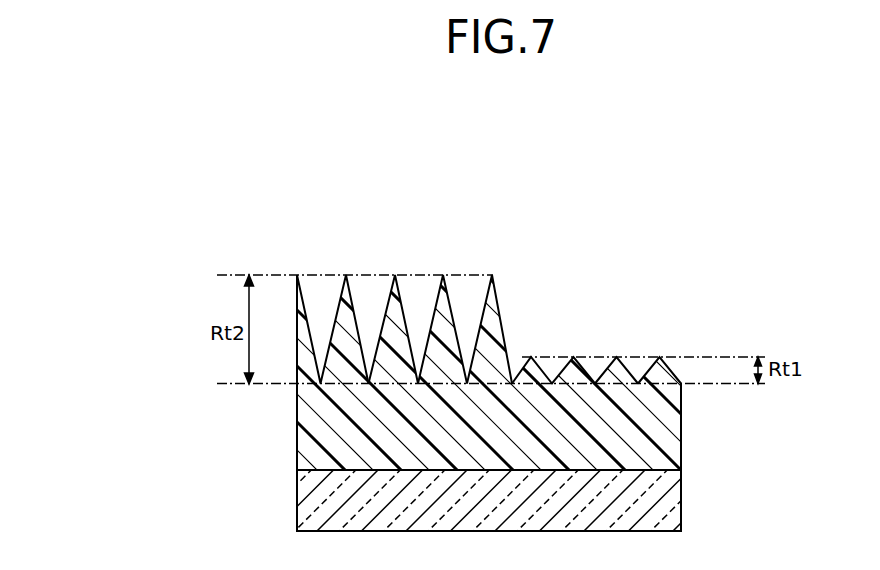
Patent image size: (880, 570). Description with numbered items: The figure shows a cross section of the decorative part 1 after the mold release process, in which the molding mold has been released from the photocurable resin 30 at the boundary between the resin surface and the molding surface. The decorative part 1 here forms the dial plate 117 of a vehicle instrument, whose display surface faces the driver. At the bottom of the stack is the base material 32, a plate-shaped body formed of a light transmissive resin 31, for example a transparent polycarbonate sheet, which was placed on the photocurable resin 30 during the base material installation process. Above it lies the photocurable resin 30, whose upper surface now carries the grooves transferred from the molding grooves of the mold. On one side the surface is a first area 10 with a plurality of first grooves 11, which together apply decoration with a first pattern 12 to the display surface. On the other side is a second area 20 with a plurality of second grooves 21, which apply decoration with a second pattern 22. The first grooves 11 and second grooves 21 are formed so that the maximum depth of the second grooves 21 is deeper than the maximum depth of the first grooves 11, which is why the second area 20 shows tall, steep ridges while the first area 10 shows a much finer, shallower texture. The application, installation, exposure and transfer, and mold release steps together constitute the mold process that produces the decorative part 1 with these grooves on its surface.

The dial plate 117 is at (193, 408).
The decorative part 1 is at (483, 332).
The first area 10 is at (606, 202).
The first grooves 11 is at (607, 368).
The first pattern 12 is at (642, 325).
The second area 20 is at (298, 180).
The second grooves 21 is at (382, 318).
The second pattern 22 is at (313, 258).
The photocurable resin 30 is at (672, 430).
The base material 32 is at (668, 503).
The light transmissive resin 31 is at (502, 505).